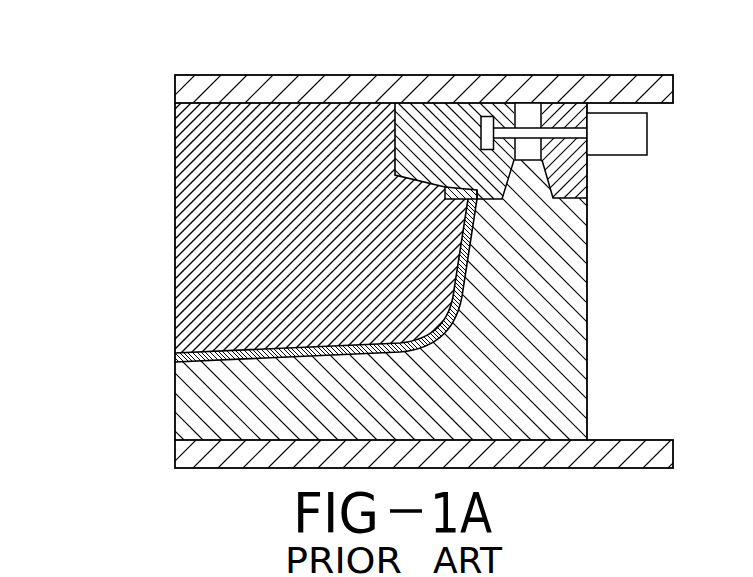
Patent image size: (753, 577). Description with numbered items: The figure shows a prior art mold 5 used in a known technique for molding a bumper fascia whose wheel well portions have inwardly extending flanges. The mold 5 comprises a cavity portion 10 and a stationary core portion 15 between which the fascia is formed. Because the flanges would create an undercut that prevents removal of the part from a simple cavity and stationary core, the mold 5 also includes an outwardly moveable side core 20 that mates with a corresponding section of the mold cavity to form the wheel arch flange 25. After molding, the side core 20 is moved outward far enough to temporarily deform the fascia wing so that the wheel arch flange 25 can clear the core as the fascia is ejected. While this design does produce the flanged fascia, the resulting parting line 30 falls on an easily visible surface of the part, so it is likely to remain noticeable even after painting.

The mold 5 is at (73, 131).
The cavity portion 10 is at (205, 392).
The stationary core portion 15 is at (233, 232).
The outwardly moveable side core 20 is at (457, 127).
The wheel arch flange 25 is at (453, 188).
The parting line 30 is at (480, 202).